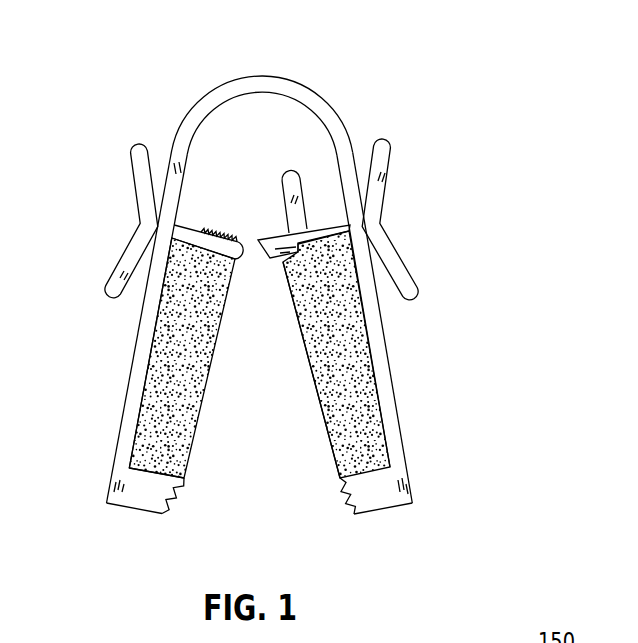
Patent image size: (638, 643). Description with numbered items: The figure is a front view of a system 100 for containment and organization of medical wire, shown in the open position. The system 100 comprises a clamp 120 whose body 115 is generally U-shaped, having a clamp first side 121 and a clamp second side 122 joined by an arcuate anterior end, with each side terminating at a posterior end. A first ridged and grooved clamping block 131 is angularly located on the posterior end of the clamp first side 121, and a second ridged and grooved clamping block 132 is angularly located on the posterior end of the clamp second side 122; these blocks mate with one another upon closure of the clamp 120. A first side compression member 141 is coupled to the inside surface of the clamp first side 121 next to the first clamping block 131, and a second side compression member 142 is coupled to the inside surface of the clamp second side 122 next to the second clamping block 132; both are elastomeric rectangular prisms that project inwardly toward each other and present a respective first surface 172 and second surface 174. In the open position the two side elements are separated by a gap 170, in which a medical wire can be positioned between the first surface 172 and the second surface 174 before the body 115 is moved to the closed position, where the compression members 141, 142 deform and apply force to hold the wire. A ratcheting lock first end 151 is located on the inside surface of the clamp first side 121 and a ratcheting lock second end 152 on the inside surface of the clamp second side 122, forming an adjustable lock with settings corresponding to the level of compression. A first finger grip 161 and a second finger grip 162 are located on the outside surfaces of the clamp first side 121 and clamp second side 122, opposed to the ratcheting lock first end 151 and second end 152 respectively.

The system for containment and organization of medical wire 100 is at (450, 337).
The body 115 is at (344, 128).
The clamp 120 is at (300, 71).
The clamp first side 121 is at (137, 355).
The clamp second side 122 is at (390, 375).
The first ridged and grooved clamping block 131 is at (148, 493).
The second ridged and grooved clamping block 132 is at (380, 489).
The first side compression member 141 is at (172, 387).
The second side compression member 142 is at (332, 298).
The ratcheting lock first end 151 is at (178, 226).
The ratcheting lock second end 152 is at (341, 223).
The first finger grip 161 is at (127, 250).
The second finger grip 162 is at (392, 248).
The gap 170 is at (263, 521).
The first surface 172 is at (182, 478).
The second surface 174 is at (317, 377).